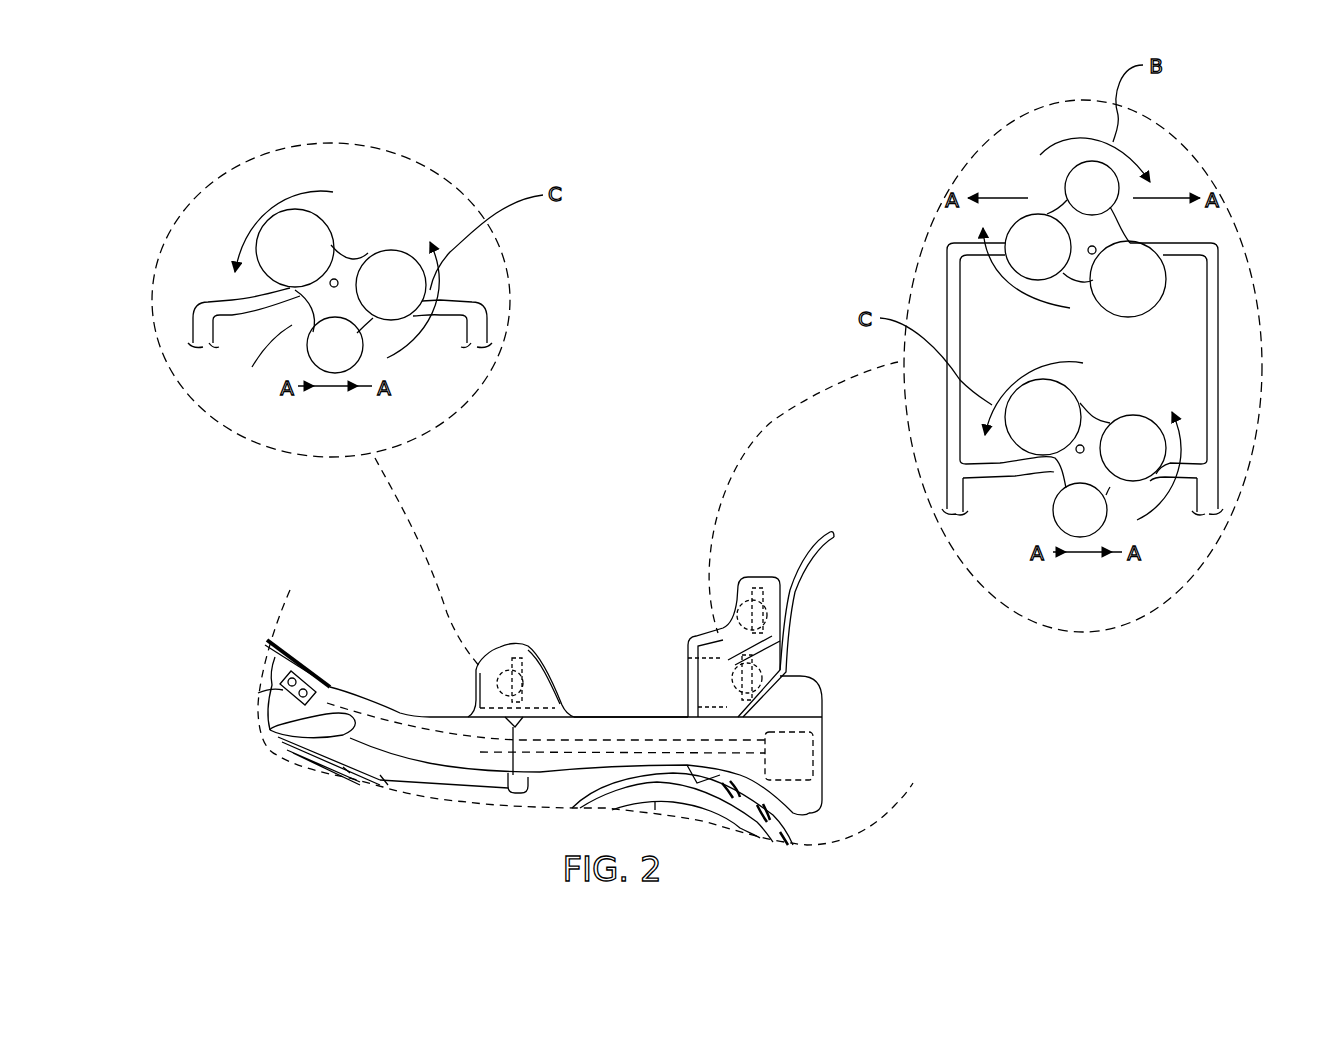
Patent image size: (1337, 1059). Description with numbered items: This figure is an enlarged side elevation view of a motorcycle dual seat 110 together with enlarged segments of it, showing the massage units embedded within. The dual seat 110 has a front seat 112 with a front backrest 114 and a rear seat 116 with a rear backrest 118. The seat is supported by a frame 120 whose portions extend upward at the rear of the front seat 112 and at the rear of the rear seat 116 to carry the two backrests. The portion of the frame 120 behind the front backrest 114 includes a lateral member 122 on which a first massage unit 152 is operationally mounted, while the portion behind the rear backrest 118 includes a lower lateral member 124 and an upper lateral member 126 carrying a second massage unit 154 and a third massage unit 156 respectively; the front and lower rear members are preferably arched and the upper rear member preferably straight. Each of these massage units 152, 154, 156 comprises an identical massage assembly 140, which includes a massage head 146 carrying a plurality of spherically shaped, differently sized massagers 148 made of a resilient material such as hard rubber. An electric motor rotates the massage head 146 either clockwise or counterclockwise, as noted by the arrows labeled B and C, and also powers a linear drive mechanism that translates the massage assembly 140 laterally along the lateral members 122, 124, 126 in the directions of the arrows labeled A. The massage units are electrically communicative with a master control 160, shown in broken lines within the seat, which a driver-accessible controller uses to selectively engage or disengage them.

The dual seat 110 is at (836, 724).
The front seat 112 is at (422, 713).
The front backrest 114 is at (495, 665).
The rear seat 116 is at (603, 716).
The rear backrest 118 is at (754, 577).
The frame 120 is at (477, 330).
The lateral member 122 is at (230, 300).
The lower lateral member 124 is at (985, 466).
The upper lateral member 126 is at (962, 243).
The massage assembly 140 is at (1069, 287).
The massage head 146 is at (362, 255).
The massagers 148 is at (355, 255).
The first massage unit 152 is at (291, 326).
The second massage unit 154 is at (1120, 498).
The third massage unit 156 is at (1141, 222).
The master control 160 is at (817, 757).